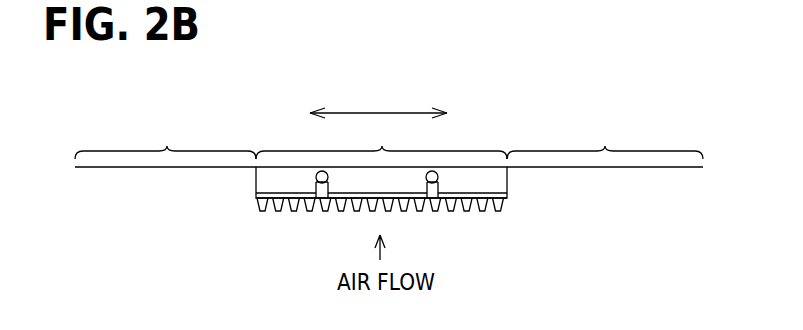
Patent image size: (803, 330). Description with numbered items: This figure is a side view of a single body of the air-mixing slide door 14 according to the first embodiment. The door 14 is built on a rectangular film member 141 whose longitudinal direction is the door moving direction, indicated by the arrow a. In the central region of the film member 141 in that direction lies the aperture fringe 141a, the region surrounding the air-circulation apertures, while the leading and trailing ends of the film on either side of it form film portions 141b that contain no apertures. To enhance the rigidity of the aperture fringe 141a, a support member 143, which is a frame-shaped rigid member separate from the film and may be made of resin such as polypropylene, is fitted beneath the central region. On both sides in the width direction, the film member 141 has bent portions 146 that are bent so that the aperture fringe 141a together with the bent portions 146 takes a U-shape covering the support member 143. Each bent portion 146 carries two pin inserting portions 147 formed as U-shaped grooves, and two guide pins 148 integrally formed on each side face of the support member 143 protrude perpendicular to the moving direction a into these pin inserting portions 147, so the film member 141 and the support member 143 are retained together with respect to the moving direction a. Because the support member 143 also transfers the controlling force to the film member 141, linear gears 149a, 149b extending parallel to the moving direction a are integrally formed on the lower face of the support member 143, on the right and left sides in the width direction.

The air-mixing slide door 14 is at (605, 180).
The film member 141 is at (637, 165).
The aperture fringe 141a is at (381, 140).
The film portions 141b is at (389, 140).
The door moving direction a is at (377, 113).
The support member 143 is at (316, 190).
The bent portions 146 is at (393, 175).
The pin inserting portions 147 is at (328, 183).
The guide pins 148 is at (316, 175).
The linear gear 149a is at (505, 207).
The linear gear 149b is at (502, 234).